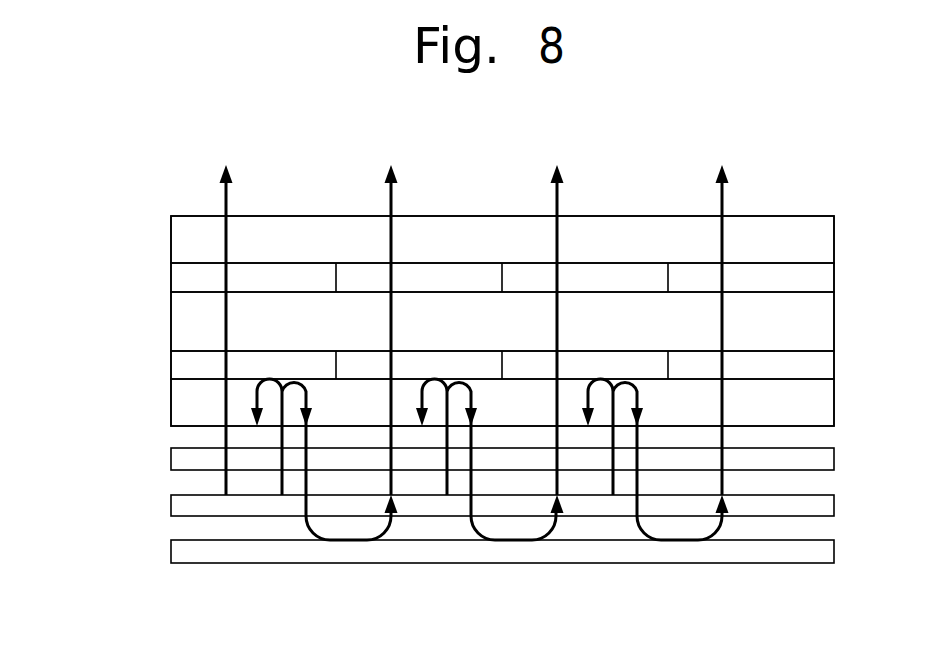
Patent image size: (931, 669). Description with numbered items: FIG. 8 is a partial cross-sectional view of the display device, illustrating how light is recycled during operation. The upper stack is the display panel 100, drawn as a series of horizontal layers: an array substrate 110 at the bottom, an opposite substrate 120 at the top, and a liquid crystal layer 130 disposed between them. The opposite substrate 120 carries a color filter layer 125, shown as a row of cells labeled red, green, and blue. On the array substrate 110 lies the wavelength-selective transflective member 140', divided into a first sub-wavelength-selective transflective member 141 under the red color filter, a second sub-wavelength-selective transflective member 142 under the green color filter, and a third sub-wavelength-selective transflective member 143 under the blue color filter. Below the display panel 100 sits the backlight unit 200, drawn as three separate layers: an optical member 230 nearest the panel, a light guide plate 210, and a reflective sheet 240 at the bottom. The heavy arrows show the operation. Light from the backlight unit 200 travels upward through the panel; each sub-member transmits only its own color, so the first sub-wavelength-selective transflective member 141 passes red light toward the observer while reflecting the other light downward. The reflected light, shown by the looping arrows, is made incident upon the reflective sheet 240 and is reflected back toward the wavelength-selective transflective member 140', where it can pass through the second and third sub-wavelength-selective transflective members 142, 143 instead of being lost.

The display panel 100 is at (72, 232).
The array substrate 110 is at (183, 403).
The opposite substrate 120 is at (183, 243).
The color filter layer 125 is at (183, 280).
The liquid crystal layer 130 is at (183, 318).
The wavelength-selective transflective member 140' is at (455, 364).
The first sub-wavelength-selective transflective member 141 is at (283, 361).
The second sub-wavelength-selective transflective member 142 is at (451, 361).
The third sub-wavelength-selective transflective member 143 is at (592, 361).
The backlight unit 200 is at (82, 452).
The light guide plate 210 is at (183, 506).
The optical member 230 is at (183, 463).
The reflective sheet 240 is at (183, 548).